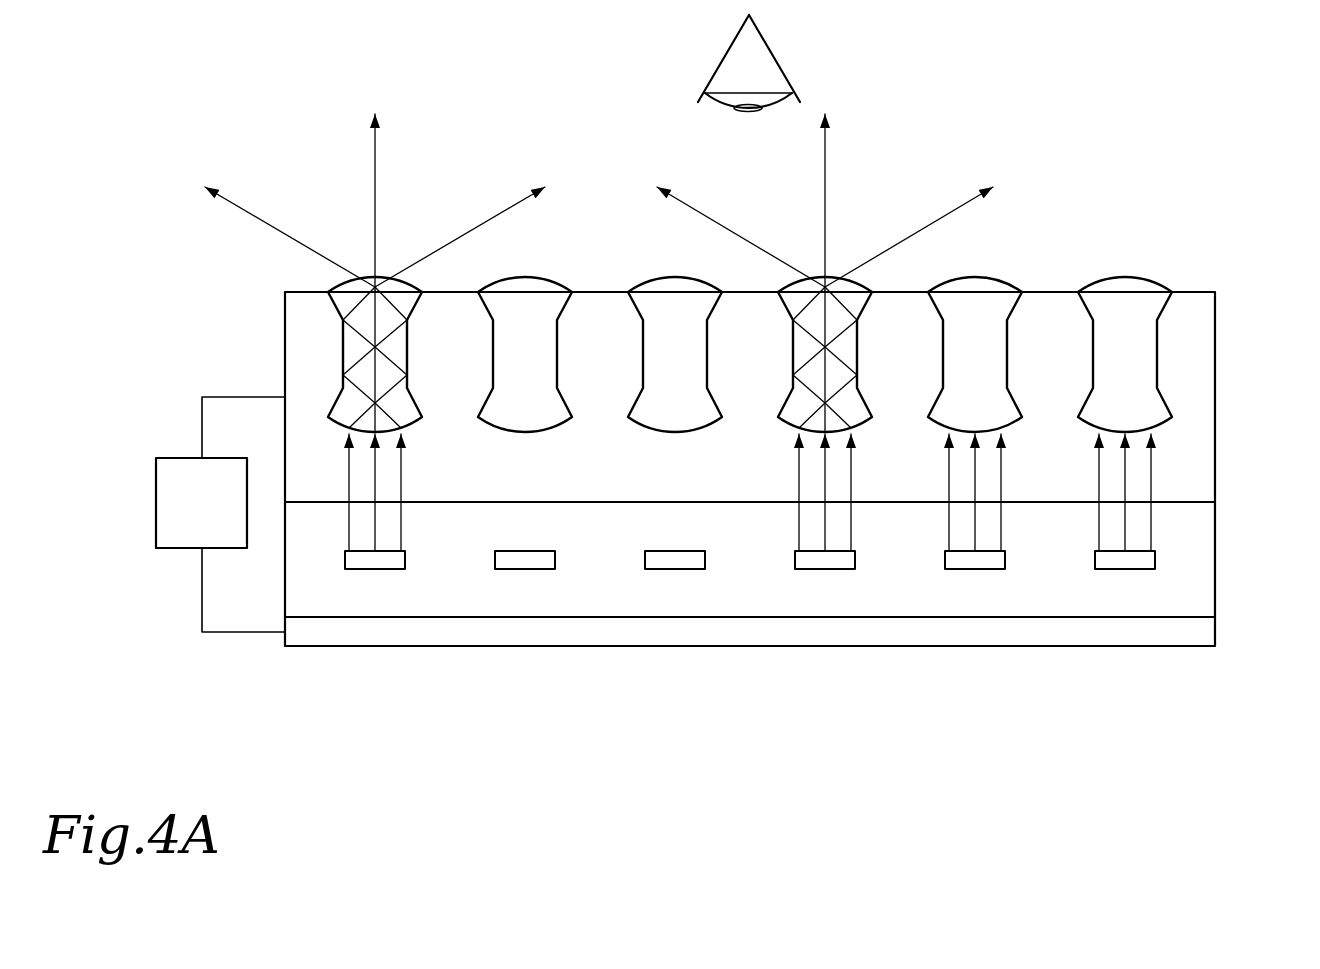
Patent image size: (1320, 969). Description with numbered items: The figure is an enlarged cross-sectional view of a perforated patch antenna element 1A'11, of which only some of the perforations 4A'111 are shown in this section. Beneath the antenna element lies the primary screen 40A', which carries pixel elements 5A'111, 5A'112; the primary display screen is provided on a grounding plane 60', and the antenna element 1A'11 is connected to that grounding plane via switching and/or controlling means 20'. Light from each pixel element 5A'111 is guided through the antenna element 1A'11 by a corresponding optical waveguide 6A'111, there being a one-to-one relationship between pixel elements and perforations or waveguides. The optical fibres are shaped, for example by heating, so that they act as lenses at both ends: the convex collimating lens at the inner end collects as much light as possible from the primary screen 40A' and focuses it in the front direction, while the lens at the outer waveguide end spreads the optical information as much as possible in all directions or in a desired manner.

The antenna element 1A'11 is at (802, 380).
The perforation 4A'111 is at (367, 273).
The optical waveguide 6A'111 is at (487, 325).
The pixel element 5A'111 is at (422, 580).
The pixel element 5A'112 is at (573, 638).
The primary screen 40A' is at (802, 529).
The grounding plane 60' is at (799, 614).
The switching and/or controlling means 20' is at (220, 549).